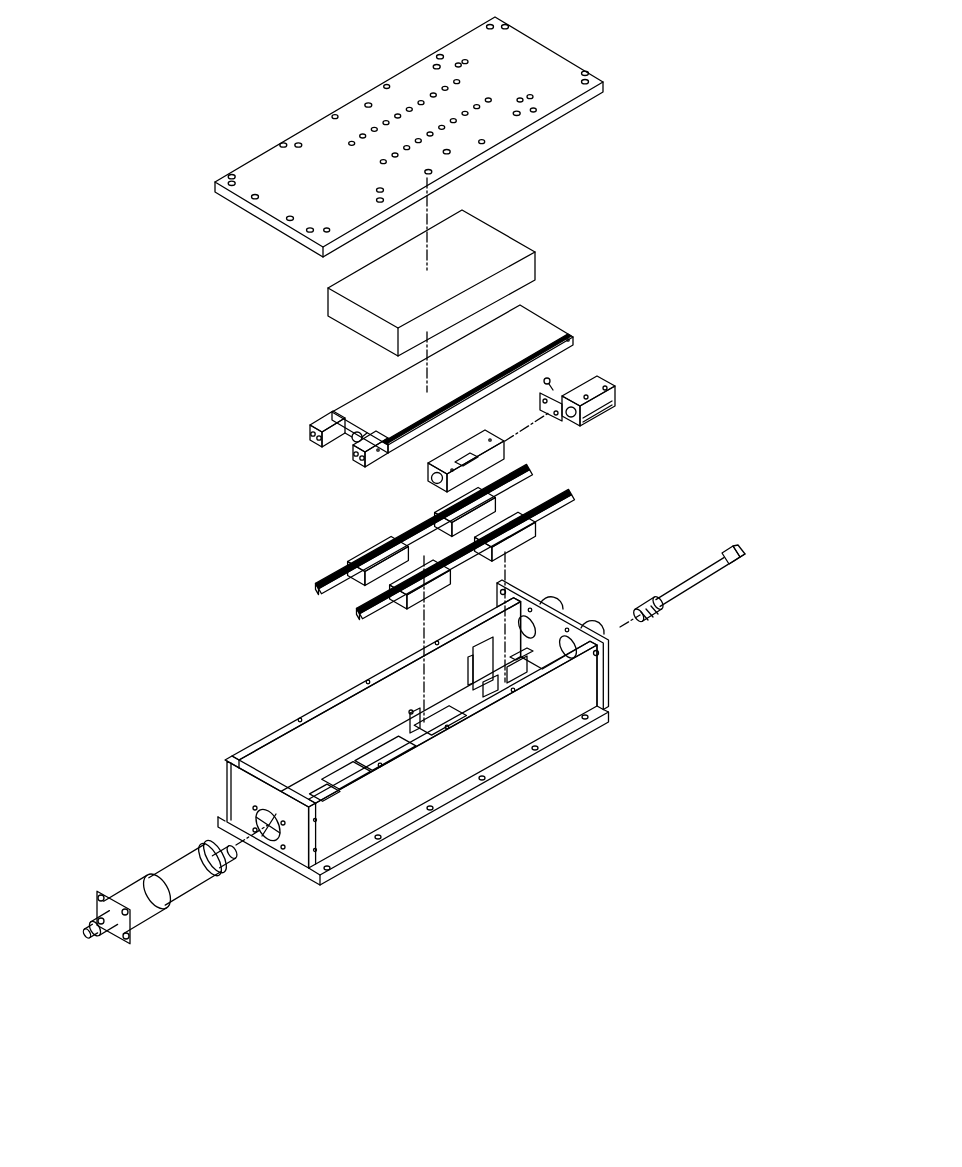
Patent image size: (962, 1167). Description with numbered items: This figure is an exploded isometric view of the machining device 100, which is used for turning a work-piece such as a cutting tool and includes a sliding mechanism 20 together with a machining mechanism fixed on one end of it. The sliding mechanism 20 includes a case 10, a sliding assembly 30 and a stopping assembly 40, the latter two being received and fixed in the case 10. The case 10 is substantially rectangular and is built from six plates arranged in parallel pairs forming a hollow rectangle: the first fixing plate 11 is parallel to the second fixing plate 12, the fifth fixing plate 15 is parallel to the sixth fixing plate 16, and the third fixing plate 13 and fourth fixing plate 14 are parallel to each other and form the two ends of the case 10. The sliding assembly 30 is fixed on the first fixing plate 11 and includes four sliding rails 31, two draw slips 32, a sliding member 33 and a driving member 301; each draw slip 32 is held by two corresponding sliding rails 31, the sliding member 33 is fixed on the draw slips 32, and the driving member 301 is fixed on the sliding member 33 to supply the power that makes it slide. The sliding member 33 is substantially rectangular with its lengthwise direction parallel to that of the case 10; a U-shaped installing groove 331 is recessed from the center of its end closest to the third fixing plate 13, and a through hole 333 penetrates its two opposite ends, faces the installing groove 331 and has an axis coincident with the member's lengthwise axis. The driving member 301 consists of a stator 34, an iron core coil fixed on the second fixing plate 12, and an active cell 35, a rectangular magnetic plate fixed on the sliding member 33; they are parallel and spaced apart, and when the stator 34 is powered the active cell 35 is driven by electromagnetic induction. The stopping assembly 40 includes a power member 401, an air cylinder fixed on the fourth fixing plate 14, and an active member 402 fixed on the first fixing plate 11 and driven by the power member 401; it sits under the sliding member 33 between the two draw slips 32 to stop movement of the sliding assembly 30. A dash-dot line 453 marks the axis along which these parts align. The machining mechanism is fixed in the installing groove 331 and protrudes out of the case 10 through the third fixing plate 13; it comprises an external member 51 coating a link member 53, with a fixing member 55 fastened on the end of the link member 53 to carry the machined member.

The machining device 100 is at (302, 35).
The second fixing plate 12 is at (258, 165).
The stator 34 is at (480, 242).
The driving member 301 is at (493, 317).
The active cell 35 is at (537, 328).
The sliding member 33 is at (479, 393).
The sliding assembly 30 is at (321, 433).
The power member 401 is at (590, 390).
The stopping assembly 40 is at (575, 427).
The axis line 453 is at (503, 445).
The active member 402 is at (500, 453).
The through hole 333 is at (350, 443).
The installing groove 331 is at (353, 450).
The sliding mechanism 20 is at (409, 401).
The draw slip 32 is at (548, 492).
The sliding rail 31 is at (530, 527).
The fourth fixing plate 14 is at (552, 602).
The sixth fixing plate 16 is at (342, 725).
The fifth fixing plate 15 is at (583, 693).
The third fixing plate 13 is at (246, 790).
The case 10 is at (408, 731).
The first fixing plate 11 is at (470, 797).
The link member 53 is at (183, 880).
The external member 51 is at (152, 910).
The fixing member 55 is at (101, 930).